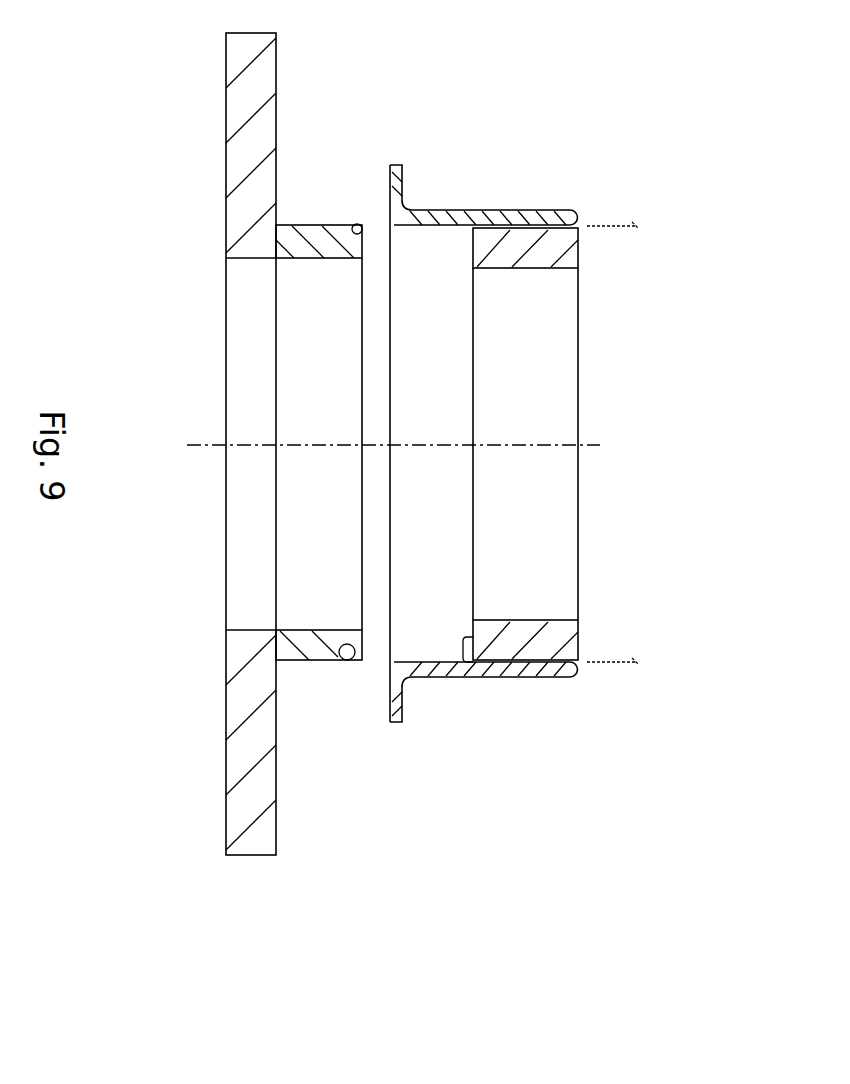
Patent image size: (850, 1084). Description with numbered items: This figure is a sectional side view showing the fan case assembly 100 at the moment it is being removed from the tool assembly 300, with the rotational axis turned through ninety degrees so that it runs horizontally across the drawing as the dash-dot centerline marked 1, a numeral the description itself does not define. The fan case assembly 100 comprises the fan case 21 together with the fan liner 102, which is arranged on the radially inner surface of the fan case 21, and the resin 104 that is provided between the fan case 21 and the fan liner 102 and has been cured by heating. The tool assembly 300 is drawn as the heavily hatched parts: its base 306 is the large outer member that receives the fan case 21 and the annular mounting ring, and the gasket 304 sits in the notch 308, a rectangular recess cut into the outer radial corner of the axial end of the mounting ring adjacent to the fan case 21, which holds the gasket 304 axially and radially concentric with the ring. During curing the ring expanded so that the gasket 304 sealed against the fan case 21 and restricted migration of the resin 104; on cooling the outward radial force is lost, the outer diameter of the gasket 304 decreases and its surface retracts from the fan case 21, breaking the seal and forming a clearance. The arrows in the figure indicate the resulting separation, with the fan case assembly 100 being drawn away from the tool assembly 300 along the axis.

The rotation axis 1 is at (600, 448).
The fan case 21 is at (467, 675).
The fan case assembly 100 is at (598, 680).
The fan liner 102 is at (305, 660).
The resin 104 is at (573, 680).
The tool assembly 300 is at (348, 672).
The gasket 304 is at (363, 665).
The base 306 is at (252, 855).
The notch 308 is at (335, 660).